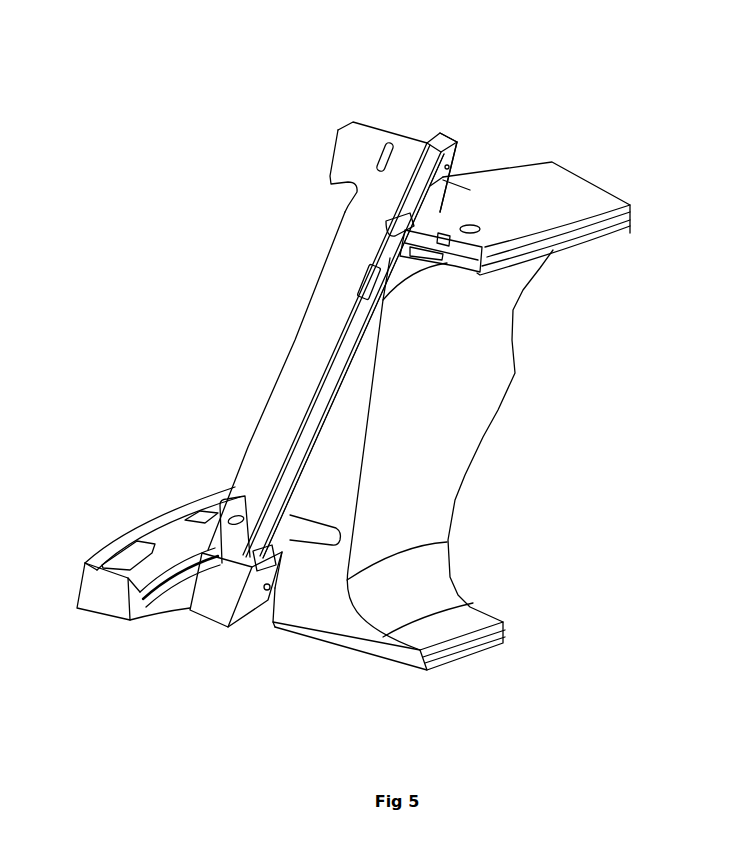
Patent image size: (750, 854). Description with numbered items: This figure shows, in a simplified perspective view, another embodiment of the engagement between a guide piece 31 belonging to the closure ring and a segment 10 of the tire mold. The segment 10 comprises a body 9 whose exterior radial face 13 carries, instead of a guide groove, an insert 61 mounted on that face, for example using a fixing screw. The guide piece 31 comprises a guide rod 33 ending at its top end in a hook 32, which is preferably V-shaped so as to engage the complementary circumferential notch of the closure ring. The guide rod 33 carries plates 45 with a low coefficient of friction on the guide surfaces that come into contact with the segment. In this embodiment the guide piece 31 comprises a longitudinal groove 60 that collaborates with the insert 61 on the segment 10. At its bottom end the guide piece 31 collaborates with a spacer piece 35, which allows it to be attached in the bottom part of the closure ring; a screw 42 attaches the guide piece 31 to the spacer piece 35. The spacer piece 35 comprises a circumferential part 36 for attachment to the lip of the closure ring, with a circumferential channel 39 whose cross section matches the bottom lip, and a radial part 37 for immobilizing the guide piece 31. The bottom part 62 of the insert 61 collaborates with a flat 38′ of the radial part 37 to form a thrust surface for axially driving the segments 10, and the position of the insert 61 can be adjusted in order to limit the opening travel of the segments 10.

The body 9 is at (330, 613).
The segment 10 is at (598, 157).
The exterior radial face 13 is at (320, 432).
The guide piece 31 is at (372, 104).
The hook 32 is at (350, 158).
The guide rod 33 is at (325, 277).
The spacer piece 35 is at (86, 545).
The circumferential part 36 is at (163, 533).
The radial part 37 is at (210, 603).
The flat 38′ is at (262, 580).
The circumferential channel 39 is at (143, 574).
The screw 42 is at (230, 560).
The plates 45 is at (459, 143).
The longitudinal groove 60 is at (410, 212).
The insert 61 is at (388, 252).
The bottom part 62 is at (360, 295).